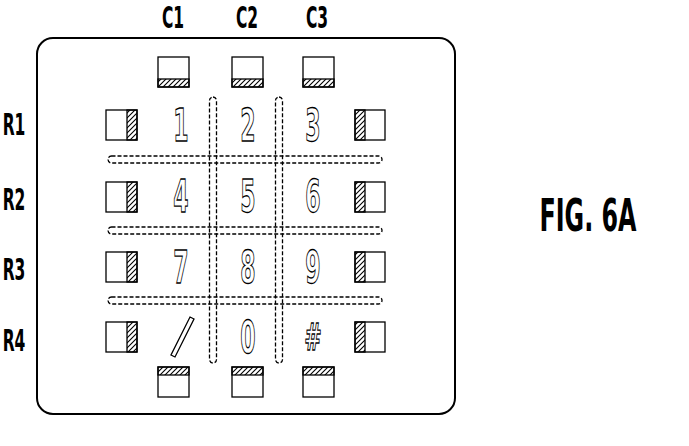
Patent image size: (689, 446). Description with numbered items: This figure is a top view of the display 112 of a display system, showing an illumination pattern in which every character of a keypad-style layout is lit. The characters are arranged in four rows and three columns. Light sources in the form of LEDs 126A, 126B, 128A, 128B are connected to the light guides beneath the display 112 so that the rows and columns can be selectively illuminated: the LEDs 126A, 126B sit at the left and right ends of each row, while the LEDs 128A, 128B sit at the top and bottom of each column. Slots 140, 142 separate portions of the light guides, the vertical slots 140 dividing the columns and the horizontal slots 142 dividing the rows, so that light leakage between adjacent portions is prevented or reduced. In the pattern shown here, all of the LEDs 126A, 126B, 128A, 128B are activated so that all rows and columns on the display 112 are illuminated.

The display 112 is at (487, 46).
The LED 126A is at (106, 193).
The LED 126B is at (385, 186).
The LED 128A is at (334, 72).
The LED 128B is at (334, 380).
The slot 140 is at (282, 101).
The slot 142 is at (368, 157).